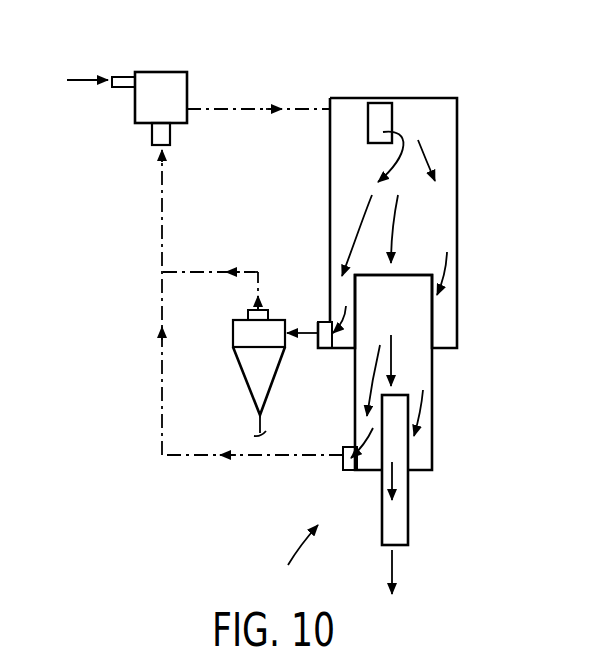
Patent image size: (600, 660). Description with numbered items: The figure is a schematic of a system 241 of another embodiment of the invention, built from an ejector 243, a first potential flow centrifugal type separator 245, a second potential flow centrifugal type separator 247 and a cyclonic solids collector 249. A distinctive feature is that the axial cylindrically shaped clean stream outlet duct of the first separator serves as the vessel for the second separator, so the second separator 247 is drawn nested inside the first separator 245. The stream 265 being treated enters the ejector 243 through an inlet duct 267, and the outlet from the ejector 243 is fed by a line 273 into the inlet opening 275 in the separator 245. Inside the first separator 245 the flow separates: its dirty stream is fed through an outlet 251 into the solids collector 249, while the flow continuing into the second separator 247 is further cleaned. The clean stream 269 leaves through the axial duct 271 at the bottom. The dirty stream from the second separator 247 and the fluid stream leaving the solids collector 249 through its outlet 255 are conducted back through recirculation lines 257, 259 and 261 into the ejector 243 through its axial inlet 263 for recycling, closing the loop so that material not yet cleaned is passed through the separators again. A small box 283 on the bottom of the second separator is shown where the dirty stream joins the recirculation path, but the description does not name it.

The system 241 is at (285, 554).
The ejector 243 is at (158, 70).
The first potential flow centrifugal type separator 245 is at (432, 216).
The second potential flow centrifugal type separator 247 is at (412, 346).
The cyclonic solids collector 249 is at (245, 382).
The outlet 251 is at (317, 346).
The outlet 255 is at (265, 310).
The recirculation line 257 is at (252, 458).
The recirculation line 259 is at (190, 272).
The recirculation line 261 is at (162, 228).
The axial inlet 263 is at (147, 135).
The stream being treated 265 is at (85, 81).
The inlet duct 267 is at (125, 76).
The clean stream 269 is at (429, 572).
The axial duct 271 is at (405, 517).
The line 273 is at (255, 105).
The inlet opening 275 is at (382, 110).
The gas outlet box 283 is at (340, 468).